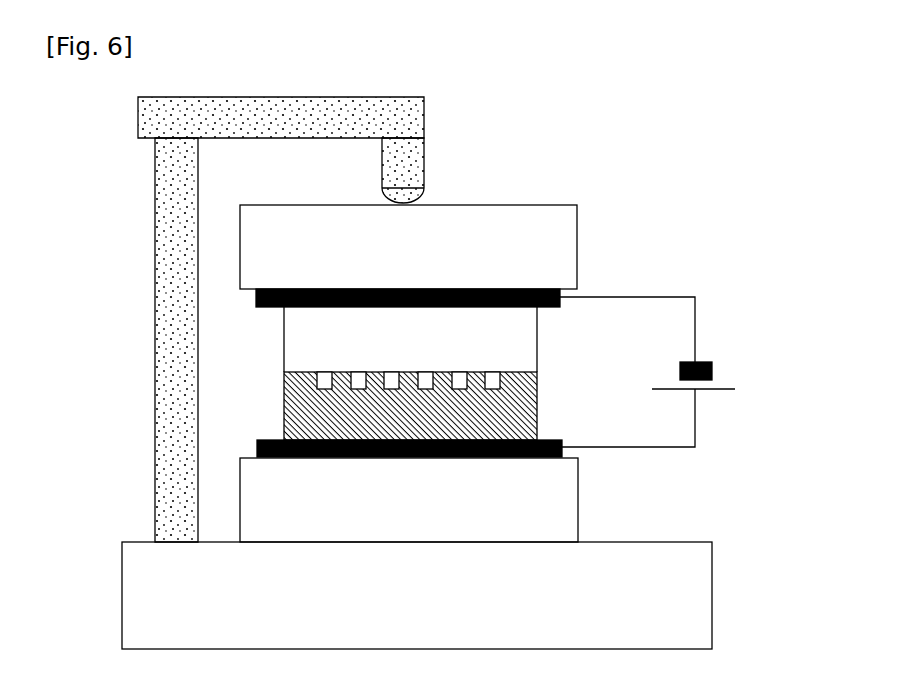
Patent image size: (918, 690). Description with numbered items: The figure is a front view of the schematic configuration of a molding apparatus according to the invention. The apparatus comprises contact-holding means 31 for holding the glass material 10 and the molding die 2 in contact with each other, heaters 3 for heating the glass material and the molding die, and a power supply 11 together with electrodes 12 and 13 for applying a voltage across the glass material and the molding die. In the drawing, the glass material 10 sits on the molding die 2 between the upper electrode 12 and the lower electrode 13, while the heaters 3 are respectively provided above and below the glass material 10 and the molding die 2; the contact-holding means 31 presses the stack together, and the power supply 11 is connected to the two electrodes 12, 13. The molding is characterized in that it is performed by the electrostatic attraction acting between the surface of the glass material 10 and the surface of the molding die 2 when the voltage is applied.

The contact-holding means 31 is at (410, 121).
The heaters 3 is at (270, 240).
The electrode 12 is at (545, 289).
The glass material 10 is at (318, 338).
The molding die 2 is at (290, 422).
The electrode 13 is at (545, 455).
The power supply 11 is at (720, 380).